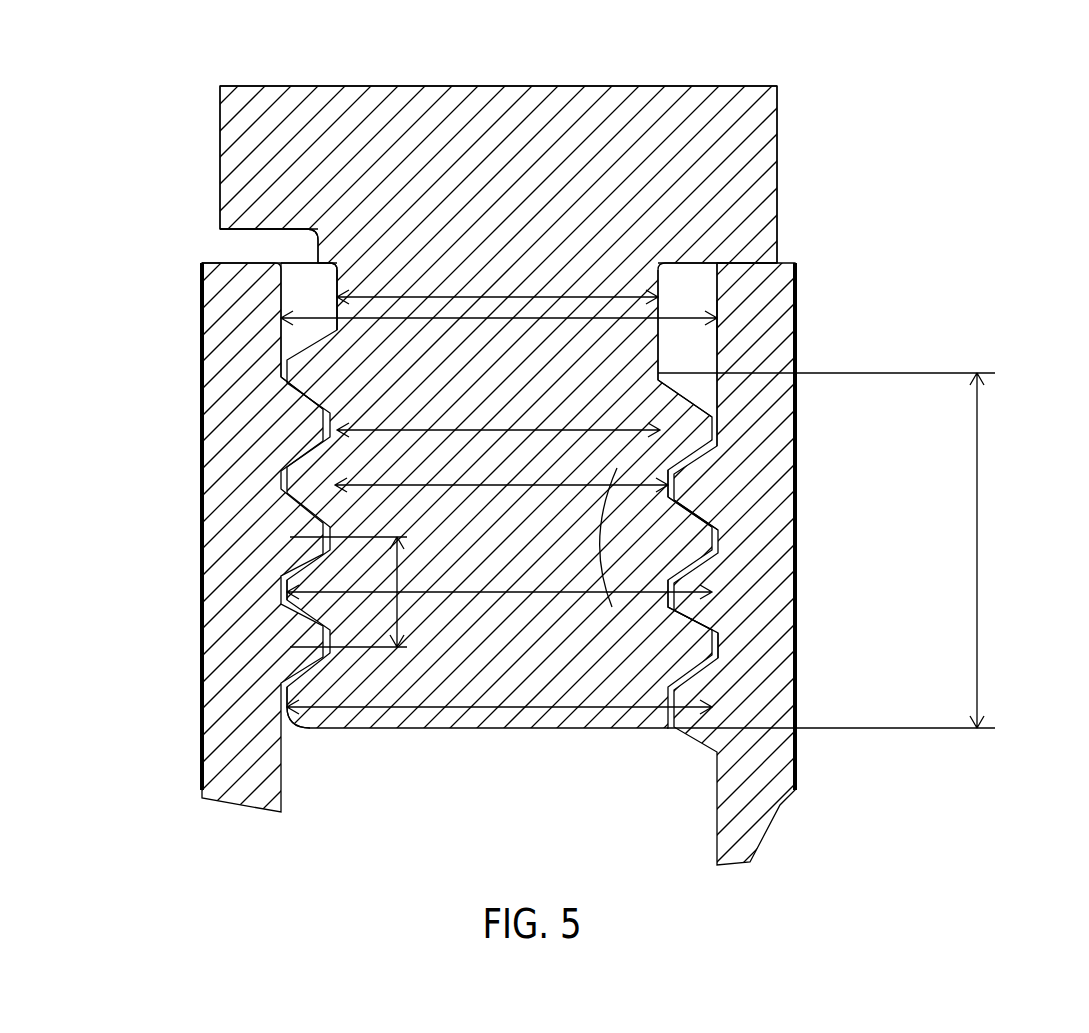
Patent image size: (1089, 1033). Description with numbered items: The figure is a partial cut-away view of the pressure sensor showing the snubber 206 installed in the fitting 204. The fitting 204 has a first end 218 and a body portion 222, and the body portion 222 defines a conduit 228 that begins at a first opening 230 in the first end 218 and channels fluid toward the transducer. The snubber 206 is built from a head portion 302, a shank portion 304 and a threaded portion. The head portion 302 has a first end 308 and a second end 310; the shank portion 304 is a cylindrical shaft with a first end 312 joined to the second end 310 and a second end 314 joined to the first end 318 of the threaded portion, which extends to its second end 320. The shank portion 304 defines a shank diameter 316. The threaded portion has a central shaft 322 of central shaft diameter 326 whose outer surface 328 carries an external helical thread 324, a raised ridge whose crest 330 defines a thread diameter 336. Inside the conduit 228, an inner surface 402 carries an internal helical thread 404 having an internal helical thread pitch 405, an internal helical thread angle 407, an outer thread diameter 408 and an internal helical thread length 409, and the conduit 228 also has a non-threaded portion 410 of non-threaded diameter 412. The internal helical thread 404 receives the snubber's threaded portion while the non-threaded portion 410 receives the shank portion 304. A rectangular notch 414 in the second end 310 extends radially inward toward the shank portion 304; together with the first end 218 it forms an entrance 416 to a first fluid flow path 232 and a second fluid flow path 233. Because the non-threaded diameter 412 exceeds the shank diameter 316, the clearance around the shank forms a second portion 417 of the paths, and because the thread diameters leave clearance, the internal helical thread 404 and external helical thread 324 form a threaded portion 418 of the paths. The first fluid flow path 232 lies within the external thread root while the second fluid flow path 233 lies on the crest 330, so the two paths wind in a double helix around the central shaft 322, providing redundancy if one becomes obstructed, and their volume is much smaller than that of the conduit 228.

The fitting 204 is at (201, 301).
The snubber 206 is at (220, 130).
The first end 218 is at (225, 262).
The body portion 222 is at (201, 637).
The conduit 228 is at (693, 288).
The first opening 230 is at (777, 231).
The first fluid flow path 232 is at (669, 472).
The second fluid flow path 233 is at (713, 537).
The head portion 302 is at (362, 102).
The shank portion 304 is at (343, 266).
The first end 308 is at (530, 102).
The second end 310 is at (678, 282).
The first end 312 is at (660, 264).
The second end 314 is at (660, 372).
The shank diameter 316 is at (493, 297).
The first end 318 is at (719, 318).
The second end 320 is at (325, 712).
The central shaft 322 is at (310, 462).
The external helical thread 324 is at (684, 528).
The central shaft diameter 326 is at (461, 428).
The outer surface 328 is at (689, 585).
The crest 330 is at (719, 650).
The thread diameter 336 is at (454, 592).
The inner surface 402 is at (281, 342).
The internal helical thread 404 is at (303, 437).
The internal helical thread pitch 405 is at (396, 560).
The internal helical thread angle 407 is at (611, 605).
The outer thread diameter 408 is at (441, 707).
The internal helical thread length 409 is at (978, 510).
The non-threaded portion 410 is at (721, 291).
The non-threaded diameter 412 is at (578, 318).
The notch 414 is at (243, 252).
The entrance 416 is at (235, 256).
The second portion 417 is at (305, 283).
The threaded portion 418 is at (289, 590).